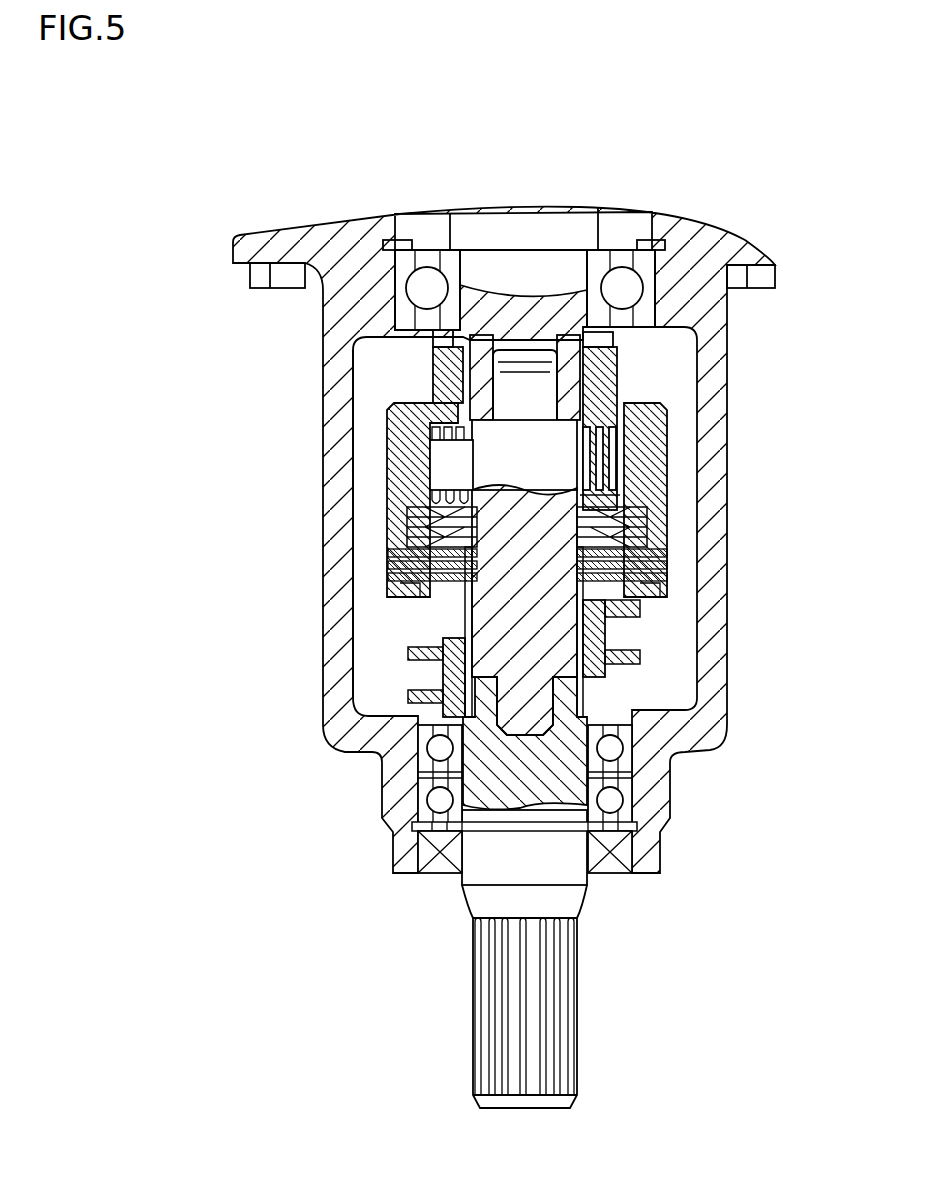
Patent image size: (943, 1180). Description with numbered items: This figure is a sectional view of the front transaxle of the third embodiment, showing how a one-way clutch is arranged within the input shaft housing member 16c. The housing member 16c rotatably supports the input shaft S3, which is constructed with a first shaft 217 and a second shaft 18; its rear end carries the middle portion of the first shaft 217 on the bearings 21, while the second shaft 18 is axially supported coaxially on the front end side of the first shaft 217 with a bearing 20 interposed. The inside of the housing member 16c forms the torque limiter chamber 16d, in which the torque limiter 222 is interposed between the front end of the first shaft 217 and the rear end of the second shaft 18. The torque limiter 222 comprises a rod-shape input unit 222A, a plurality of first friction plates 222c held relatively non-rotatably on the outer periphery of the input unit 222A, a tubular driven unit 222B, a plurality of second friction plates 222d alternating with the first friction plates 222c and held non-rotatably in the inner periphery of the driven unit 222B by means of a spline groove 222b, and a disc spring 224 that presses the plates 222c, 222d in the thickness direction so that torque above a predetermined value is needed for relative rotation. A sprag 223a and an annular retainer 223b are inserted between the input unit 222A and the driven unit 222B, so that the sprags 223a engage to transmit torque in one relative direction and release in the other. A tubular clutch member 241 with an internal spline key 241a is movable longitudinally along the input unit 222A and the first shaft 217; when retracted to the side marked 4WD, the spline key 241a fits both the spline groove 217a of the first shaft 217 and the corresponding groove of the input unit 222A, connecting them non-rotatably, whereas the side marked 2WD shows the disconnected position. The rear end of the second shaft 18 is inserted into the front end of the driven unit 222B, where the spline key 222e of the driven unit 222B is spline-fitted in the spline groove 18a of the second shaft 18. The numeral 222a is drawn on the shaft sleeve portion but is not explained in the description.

The bearing 20 is at (398, 265).
The spline groove 18a is at (592, 336).
The spline key 222e is at (582, 388).
The input shaft housing member 16c is at (330, 392).
The torque limiter chamber 16d is at (372, 460).
The annular retainer 223b is at (610, 467).
The sprag 223a is at (445, 465).
The disc spring 224 is at (613, 527).
The spline groove 222b is at (650, 563).
The first friction plate 222c is at (660, 575).
The second friction plate 222d is at (660, 584).
The driven unit 222B is at (402, 498).
The input unit 222A is at (493, 612).
The torque limiter 222 is at (250, 568).
The sleeve 222a is at (472, 625).
The spline key 241a is at (407, 665).
The clutch member 241 is at (440, 698).
The spline groove 217a is at (467, 732).
The bearing 21 is at (425, 810).
The second shaft 18 is at (432, 338).
The first shaft 217 is at (500, 907).
The input shaft S3 is at (152, 598).